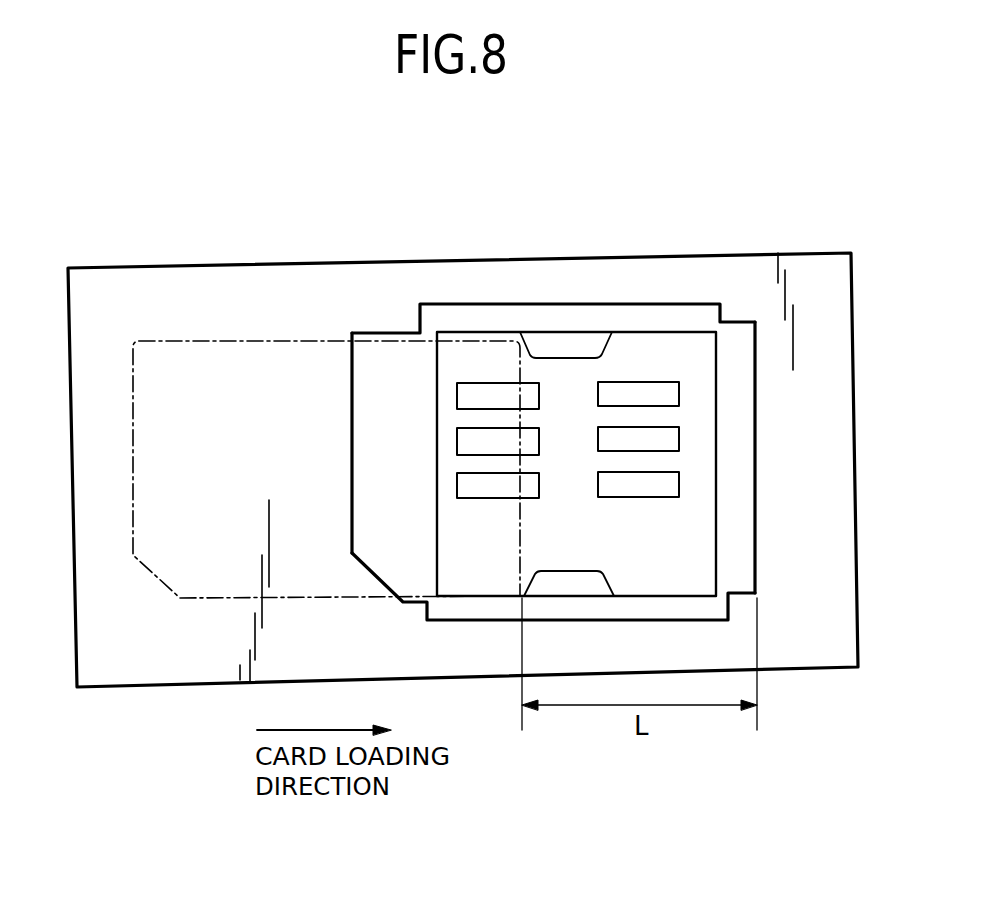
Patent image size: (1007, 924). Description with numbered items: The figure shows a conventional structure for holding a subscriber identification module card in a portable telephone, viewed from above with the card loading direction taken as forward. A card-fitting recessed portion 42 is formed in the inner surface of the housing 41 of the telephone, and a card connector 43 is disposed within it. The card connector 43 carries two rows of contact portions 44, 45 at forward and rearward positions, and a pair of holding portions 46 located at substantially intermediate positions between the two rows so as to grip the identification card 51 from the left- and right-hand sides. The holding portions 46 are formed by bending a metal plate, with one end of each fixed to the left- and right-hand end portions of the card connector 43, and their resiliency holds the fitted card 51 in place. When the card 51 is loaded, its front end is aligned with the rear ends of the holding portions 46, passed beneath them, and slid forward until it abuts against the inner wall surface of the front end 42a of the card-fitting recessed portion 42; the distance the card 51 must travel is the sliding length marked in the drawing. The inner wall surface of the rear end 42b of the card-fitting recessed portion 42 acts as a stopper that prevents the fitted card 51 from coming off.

The housing 41 is at (820, 260).
The card-fitting recessed portion 42 is at (552, 452).
The front end 42a is at (755, 540).
The rear end 42b is at (352, 458).
The card connector 43 is at (625, 342).
The contact portions 44 is at (657, 389).
The contact portions 45 is at (482, 396).
The holding portions 46 is at (556, 338).
The identification card 51 is at (200, 596).